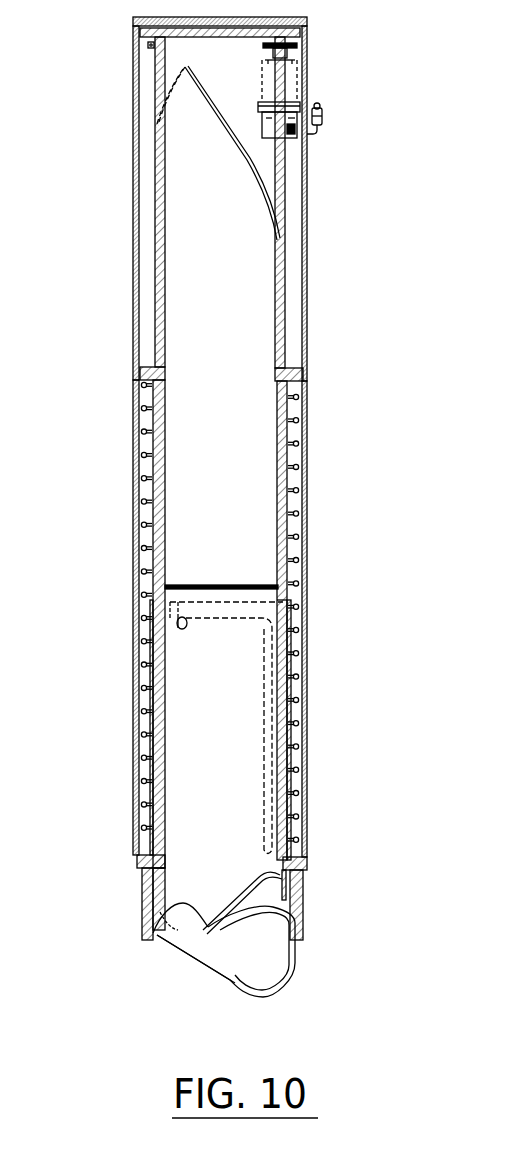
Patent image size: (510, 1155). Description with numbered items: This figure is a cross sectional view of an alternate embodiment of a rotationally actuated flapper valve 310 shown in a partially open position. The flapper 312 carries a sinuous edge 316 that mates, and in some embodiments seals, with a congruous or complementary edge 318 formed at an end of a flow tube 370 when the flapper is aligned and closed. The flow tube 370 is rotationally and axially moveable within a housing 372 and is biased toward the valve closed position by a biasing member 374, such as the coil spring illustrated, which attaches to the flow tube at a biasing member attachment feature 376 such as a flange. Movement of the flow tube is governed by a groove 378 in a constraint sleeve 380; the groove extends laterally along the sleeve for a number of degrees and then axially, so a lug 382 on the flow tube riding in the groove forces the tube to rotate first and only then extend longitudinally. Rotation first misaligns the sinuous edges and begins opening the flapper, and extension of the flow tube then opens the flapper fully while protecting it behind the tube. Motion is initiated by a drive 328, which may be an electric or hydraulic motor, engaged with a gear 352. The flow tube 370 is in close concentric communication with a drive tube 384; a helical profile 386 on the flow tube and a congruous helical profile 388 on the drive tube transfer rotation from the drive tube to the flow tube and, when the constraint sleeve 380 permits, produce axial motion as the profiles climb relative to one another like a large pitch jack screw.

The rotationally actuated flapper valve 310 is at (500, 221).
The flapper 312 is at (273, 997).
The sinuous edge 316 is at (230, 968).
The congruous edge 318 is at (218, 927).
The drive 328 is at (342, 126).
The gear 352 is at (153, 47).
The flow tube 370 is at (303, 342).
The housing 372 is at (305, 297).
The biasing member 374 is at (304, 702).
The biasing member attachment feature 376 is at (302, 380).
The groove 378 is at (220, 625).
The constraint sleeve 380 is at (292, 620).
The lug 382 is at (178, 626).
The drive tube 384 is at (198, 48).
The helical profile 386 is at (172, 98).
The helical profile 388 is at (258, 185).